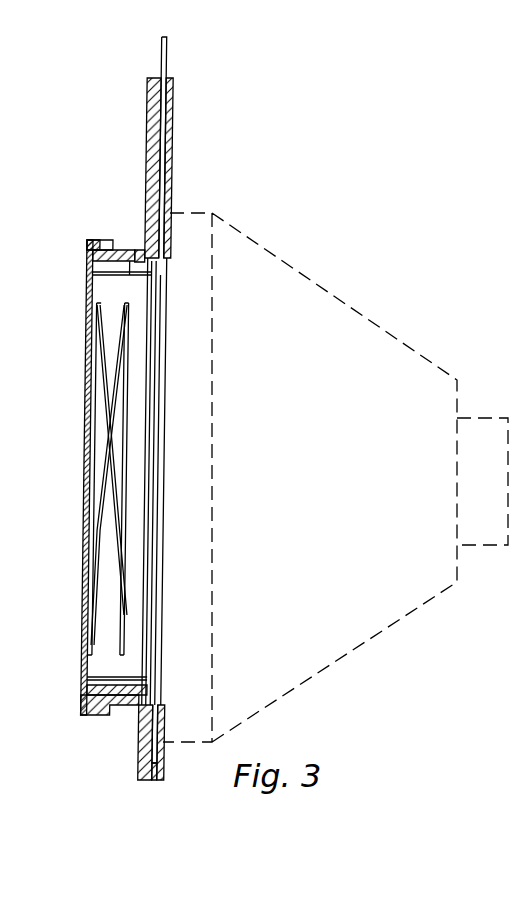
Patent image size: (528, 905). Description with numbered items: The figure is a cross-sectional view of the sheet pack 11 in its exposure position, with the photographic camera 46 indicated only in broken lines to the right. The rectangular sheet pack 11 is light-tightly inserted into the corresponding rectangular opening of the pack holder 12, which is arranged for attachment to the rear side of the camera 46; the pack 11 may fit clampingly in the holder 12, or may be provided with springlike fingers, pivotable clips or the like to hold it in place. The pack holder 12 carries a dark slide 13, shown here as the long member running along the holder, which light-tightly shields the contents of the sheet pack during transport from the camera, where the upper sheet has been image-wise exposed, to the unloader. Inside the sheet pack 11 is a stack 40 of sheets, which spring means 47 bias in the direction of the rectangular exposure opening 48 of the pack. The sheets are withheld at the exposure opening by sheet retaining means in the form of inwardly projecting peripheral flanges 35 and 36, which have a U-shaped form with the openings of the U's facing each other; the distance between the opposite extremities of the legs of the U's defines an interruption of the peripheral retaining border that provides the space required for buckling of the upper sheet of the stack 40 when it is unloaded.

The sheet pack 11 is at (87, 247).
The pack holder 12 is at (142, 250).
The dark slide 13 is at (168, 64).
The peripheral flange 35 is at (150, 277).
The peripheral flange 36 is at (87, 683).
The stack of sheets 40 is at (138, 490).
The photographic camera 46 is at (310, 298).
The spring means 47 is at (122, 572).
The exposure opening 48 is at (165, 437).